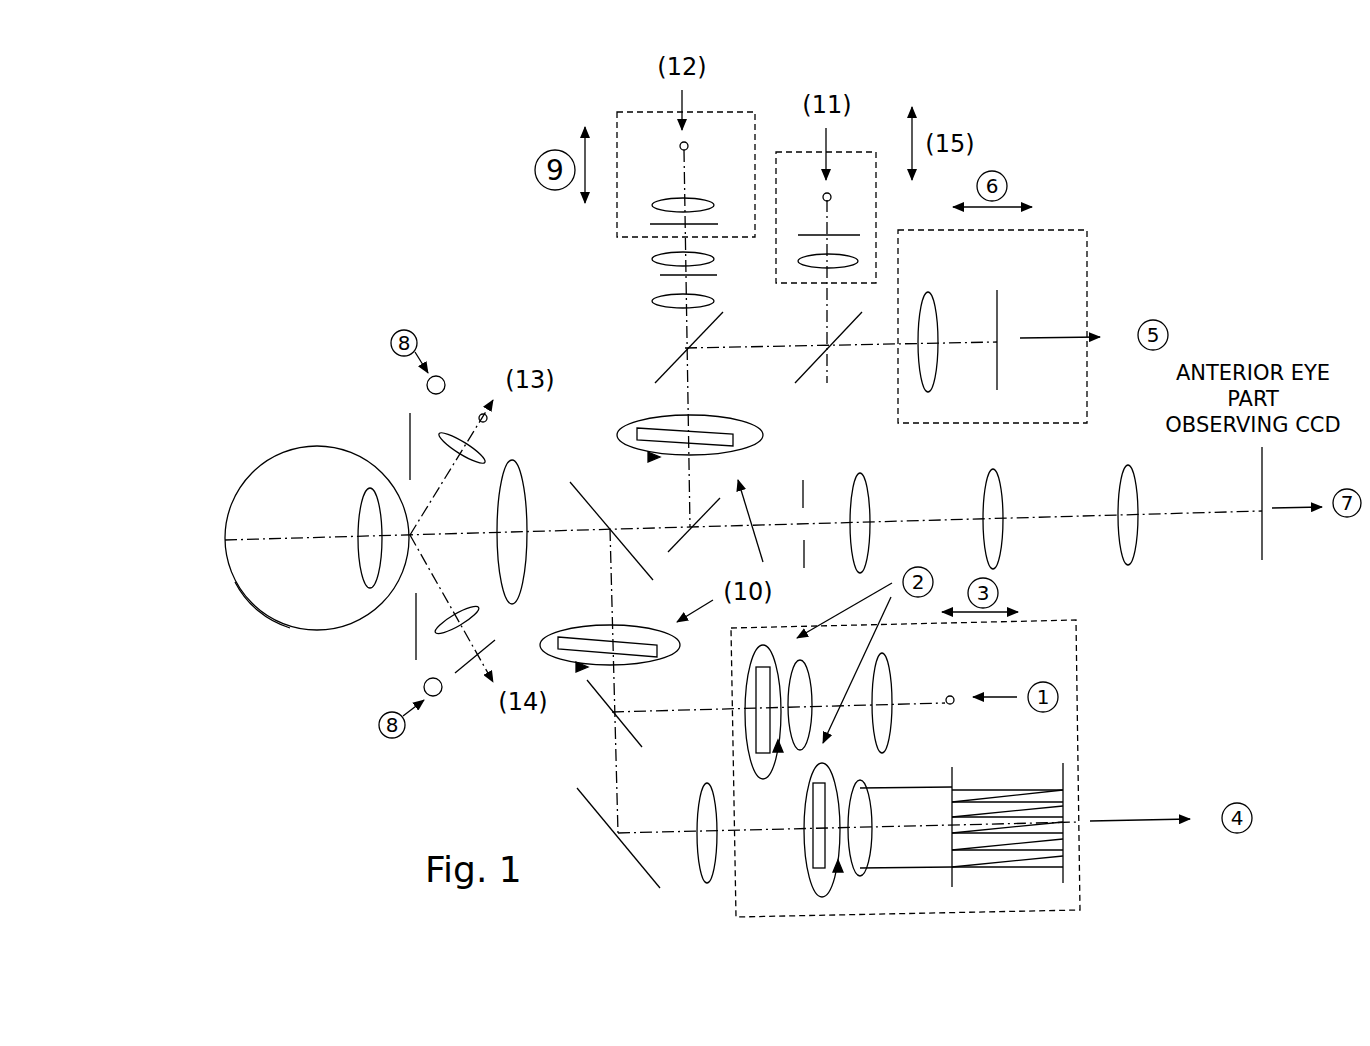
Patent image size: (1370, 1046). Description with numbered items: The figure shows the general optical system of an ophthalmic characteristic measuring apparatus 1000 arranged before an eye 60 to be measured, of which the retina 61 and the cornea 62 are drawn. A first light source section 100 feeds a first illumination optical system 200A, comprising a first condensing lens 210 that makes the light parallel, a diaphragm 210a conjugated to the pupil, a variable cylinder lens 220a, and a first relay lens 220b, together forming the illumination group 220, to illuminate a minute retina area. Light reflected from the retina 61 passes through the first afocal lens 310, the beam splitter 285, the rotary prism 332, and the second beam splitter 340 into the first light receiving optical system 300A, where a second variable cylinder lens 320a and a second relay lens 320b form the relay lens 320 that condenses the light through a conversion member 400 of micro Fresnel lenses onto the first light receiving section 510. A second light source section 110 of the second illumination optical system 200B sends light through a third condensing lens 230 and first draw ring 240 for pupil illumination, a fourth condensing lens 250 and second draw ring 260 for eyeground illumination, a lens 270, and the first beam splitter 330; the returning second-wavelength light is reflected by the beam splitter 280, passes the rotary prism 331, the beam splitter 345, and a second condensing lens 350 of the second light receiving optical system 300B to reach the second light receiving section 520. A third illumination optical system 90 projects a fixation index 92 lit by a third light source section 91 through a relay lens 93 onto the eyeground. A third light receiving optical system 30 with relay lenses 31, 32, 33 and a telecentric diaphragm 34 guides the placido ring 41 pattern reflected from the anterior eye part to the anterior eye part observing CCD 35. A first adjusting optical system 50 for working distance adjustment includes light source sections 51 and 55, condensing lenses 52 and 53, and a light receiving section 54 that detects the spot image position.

The ophthalmic characteristic measuring apparatus 1000 is at (292, 203).
The eye to be measured 60 is at (312, 525).
The retina 61 is at (241, 605).
The cornea 62 is at (396, 626).
The placido ring 41 is at (394, 427).
The first adjusting optical system 50 is at (489, 495).
The light source section 51 is at (455, 541).
The condensing lens 52 is at (462, 471).
The condensing lens 53 is at (456, 602).
The light receiving section 54 is at (482, 639).
The light source section 55 is at (509, 418).
The first afocal lens 310 is at (528, 521).
The beam splitter 285 is at (611, 519).
The beam splitter 280 is at (702, 537).
The rotary prism 331 is at (701, 419).
The rotary prism 332 is at (610, 627).
The first beam splitter 330 is at (676, 347).
The beam splitter 345 is at (828, 366).
The second beam splitter 340 is at (596, 713).
The second illumination optical system 200B is at (693, 160).
The second light source section 110 is at (655, 156).
The fourth condensing lens 250 is at (700, 188).
The second draw ring 260 is at (707, 207).
The third condensing lens 230 is at (713, 260).
The first draw ring 240 is at (657, 294).
The lens 270 is at (713, 303).
The third illumination optical system 90 is at (838, 203).
The third light source section 91 is at (849, 186).
The fixation index 92 is at (820, 216).
The relay lens 93 is at (823, 281).
The second light receiving optical system 300B is at (992, 326).
The second condensing lens 350 is at (954, 354).
The second light receiving section 520 is at (1024, 347).
The telecentric diaphragm 34 is at (828, 510).
The relay lens 31 is at (884, 512).
The relay lens 32 is at (1017, 510).
The relay lens 33 is at (1154, 507).
The third light receiving section 35 is at (1282, 527).
The third light receiving optical system 30 is at (1219, 596).
The polarizer unit 220 is at (905, 743).
The first variable cylinder lens 220a is at (791, 830).
The first relay lens 220b is at (805, 704).
The first condensing lens 210 is at (907, 698).
The first light source section 100 is at (970, 682).
The first illumination optical system 200A is at (908, 649).
The second variable cylinder lens 320a is at (796, 843).
The second relay lens 320b is at (890, 847).
The relay lens 320 is at (867, 860).
The diaphragm 210a is at (906, 817).
The conversion member 400 is at (980, 841).
The first light receiving section 510 is at (1038, 808).
The first light receiving optical system 300A is at (999, 792).